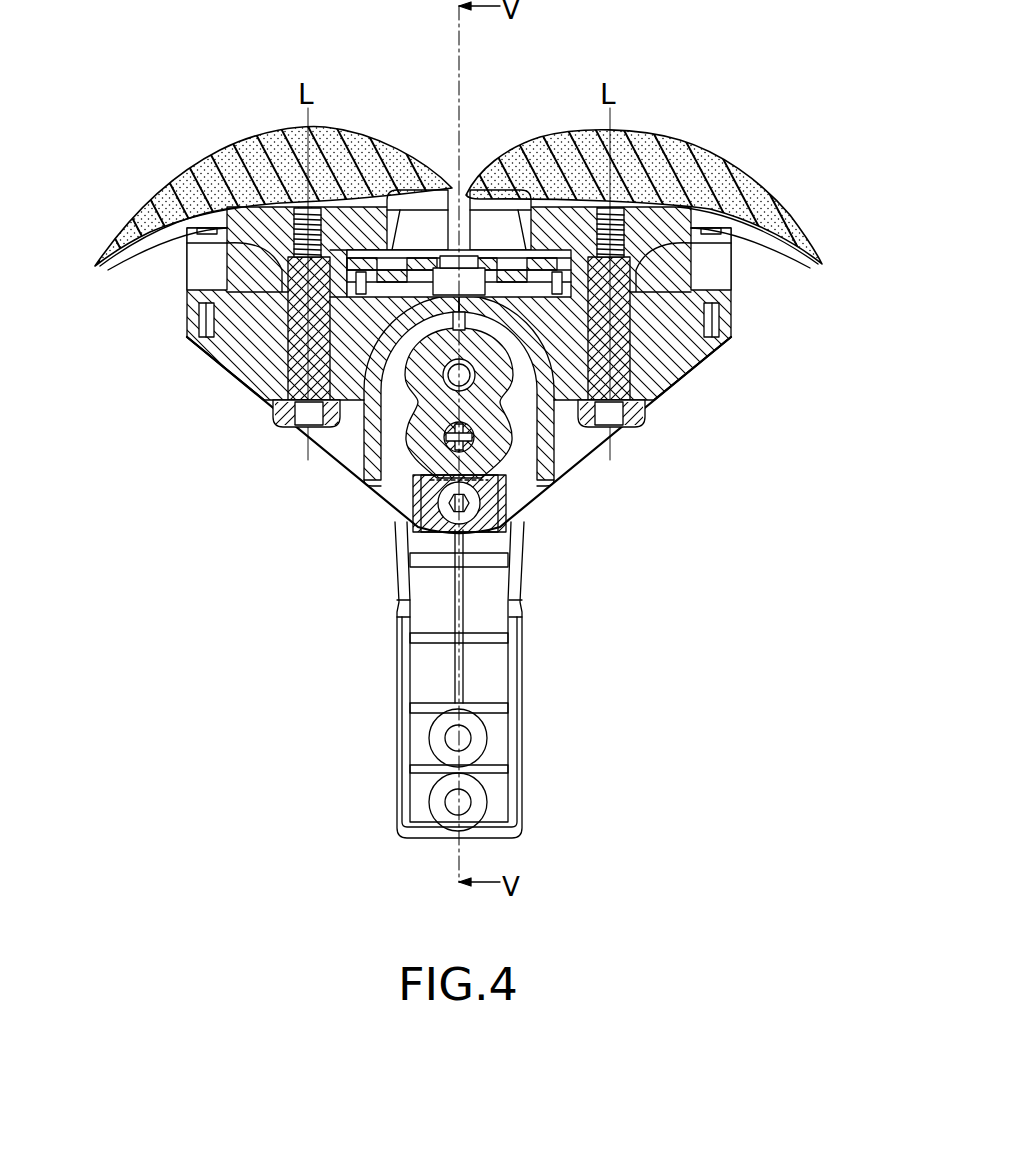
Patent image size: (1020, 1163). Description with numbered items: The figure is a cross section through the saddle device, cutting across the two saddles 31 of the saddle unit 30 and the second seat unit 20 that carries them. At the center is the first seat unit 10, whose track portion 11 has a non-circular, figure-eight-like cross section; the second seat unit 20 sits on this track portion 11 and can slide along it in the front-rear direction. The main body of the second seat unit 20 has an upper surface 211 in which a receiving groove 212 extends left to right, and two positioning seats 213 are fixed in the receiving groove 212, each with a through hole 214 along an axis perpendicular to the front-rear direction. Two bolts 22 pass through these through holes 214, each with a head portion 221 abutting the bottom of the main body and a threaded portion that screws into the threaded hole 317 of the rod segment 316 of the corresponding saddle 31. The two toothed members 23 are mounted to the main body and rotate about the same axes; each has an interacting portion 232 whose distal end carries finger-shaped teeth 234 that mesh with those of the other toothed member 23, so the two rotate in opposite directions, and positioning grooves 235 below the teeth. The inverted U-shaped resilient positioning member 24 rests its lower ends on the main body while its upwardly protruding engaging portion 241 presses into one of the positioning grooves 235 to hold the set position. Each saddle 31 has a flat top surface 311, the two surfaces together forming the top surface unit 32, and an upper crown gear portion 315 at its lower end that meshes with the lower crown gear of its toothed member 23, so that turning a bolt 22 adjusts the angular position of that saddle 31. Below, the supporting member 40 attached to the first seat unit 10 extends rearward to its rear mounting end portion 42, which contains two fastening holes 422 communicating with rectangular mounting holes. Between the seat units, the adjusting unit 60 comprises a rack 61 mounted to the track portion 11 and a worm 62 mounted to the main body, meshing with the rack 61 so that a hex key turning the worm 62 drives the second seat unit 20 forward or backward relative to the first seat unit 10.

The first seat unit 10 is at (420, 410).
The track portion 11 is at (488, 438).
The second seat unit 20 is at (240, 367).
The upper surface 211 is at (233, 290).
The receiving groove 212 is at (378, 262).
The positioning seats 213 is at (273, 322).
The through hole 214 is at (262, 395).
The bolts 22 is at (623, 357).
The head portion 221 is at (640, 423).
The toothed members 23 is at (673, 282).
The interacting portion 232 is at (472, 278).
The finger-shaped teeth 234 is at (452, 252).
The positioning grooves 235 is at (428, 262).
The resilient positioning member 24 is at (572, 437).
The engaging portion 241 is at (497, 262).
The saddle unit 30 is at (655, 126).
The saddles 31 is at (208, 163).
The flat top surface 311 is at (690, 140).
The upper crown gear portion 315 is at (553, 257).
The rod segment 316 is at (690, 308).
The threaded hole 317 is at (715, 210).
The top surface unit 32 is at (258, 130).
The supporting member 40 is at (522, 770).
The rear mounting end portion 42 is at (510, 813).
The fastening holes 422 is at (450, 800).
The adjusting unit 60 is at (440, 490).
The rack 61 is at (433, 497).
The worm 62 is at (470, 515).